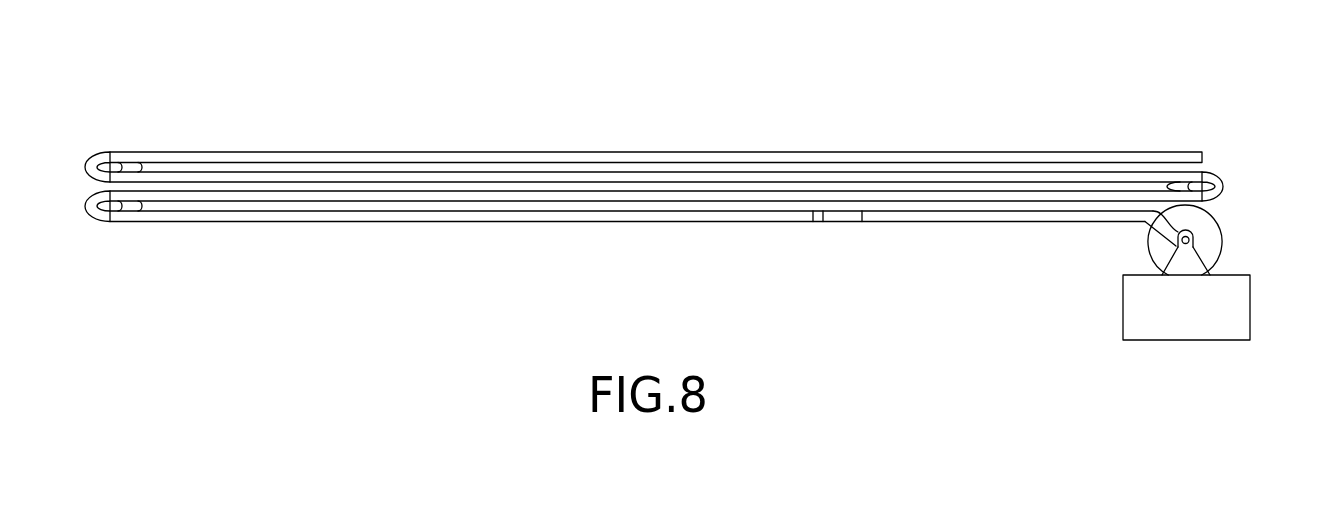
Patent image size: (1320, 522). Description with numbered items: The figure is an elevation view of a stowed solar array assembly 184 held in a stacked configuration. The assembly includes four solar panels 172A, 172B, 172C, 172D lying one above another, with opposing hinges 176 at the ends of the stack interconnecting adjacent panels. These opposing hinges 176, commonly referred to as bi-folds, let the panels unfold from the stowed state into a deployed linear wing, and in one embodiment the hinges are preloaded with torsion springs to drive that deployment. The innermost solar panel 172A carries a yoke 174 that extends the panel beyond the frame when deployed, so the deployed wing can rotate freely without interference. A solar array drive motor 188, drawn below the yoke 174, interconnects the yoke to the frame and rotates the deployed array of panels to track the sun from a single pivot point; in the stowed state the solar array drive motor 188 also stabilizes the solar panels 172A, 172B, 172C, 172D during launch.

The innermost solar panel 172A is at (583, 222).
The solar panel 172B is at (882, 192).
The solar panel 172C is at (983, 172).
The solar panel 172D is at (1068, 152).
The yoke 174 is at (912, 223).
The opposing hinges 176 is at (87, 166).
The stowed solar array assembly 184 is at (895, 68).
The solar array drive motor 188 is at (1250, 308).